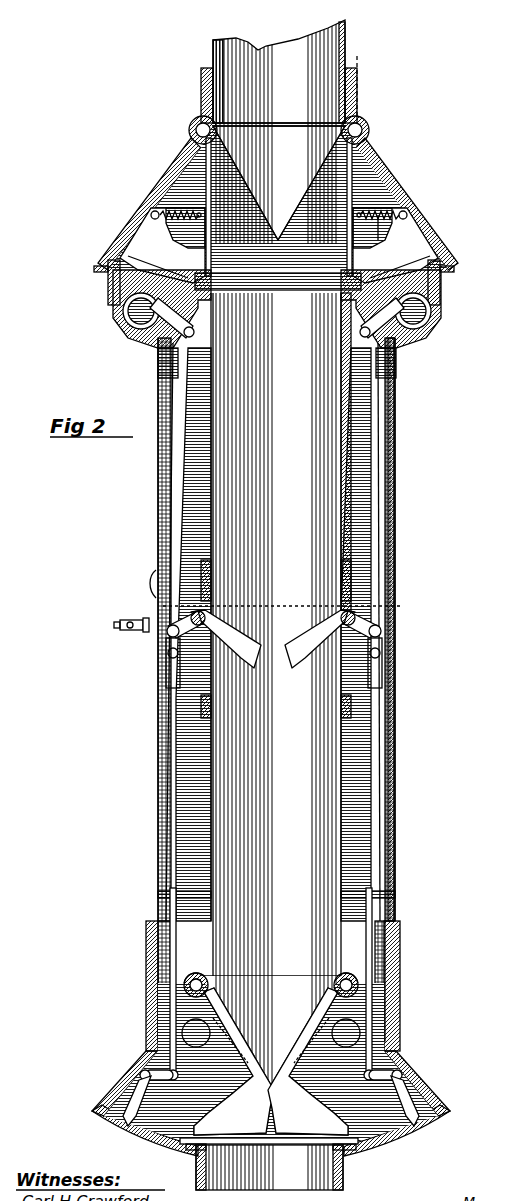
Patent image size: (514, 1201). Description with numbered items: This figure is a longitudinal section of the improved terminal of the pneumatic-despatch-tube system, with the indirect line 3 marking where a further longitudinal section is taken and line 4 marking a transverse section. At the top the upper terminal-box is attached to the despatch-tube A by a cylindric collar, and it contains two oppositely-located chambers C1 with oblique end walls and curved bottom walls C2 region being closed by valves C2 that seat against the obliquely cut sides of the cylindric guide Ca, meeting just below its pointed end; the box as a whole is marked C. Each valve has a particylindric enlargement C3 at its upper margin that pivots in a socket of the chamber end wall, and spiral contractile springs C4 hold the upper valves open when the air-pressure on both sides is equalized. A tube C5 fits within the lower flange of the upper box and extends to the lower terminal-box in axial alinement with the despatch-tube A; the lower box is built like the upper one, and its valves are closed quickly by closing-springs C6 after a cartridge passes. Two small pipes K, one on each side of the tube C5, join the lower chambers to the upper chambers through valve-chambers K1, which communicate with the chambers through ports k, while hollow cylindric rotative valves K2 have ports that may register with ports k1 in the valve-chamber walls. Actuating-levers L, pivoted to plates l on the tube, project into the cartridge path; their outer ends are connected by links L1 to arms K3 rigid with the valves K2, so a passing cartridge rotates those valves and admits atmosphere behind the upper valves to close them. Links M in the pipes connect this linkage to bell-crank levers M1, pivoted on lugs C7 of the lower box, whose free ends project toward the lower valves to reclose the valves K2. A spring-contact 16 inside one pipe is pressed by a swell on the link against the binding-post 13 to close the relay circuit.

The despatch-tube A is at (337, 22).
The terminal-box chamber C is at (349, 74).
The section line 3 3 is at (362, 83).
The cylindric guide Ca is at (279, 582).
The chamber C1 is at (450, 1082).
The valve C2 is at (198, 226).
The particylindric enlargement C3 is at (190, 117).
The spiral contractile spring C4 is at (185, 203).
The tube C5 is at (330, 330).
The quick-acting closing-spring C6 is at (130, 258).
The lug C7 is at (135, 1060).
The pipe K is at (152, 458).
The valve-chamber K1 is at (110, 320).
The hollow cylindric rotative valve K2 is at (112, 297).
The arm K3 is at (155, 352).
The port k is at (92, 262).
The port k1 is at (140, 330).
The actuating-lever L is at (238, 635).
The link L1 is at (172, 482).
The plate l is at (200, 567).
The link M is at (160, 788).
The bell-crank lever M1 is at (125, 1068).
The section line 4 4 is at (136, 660).
The binding-post 13 is at (115, 622).
The spring-contact 16 is at (140, 575).